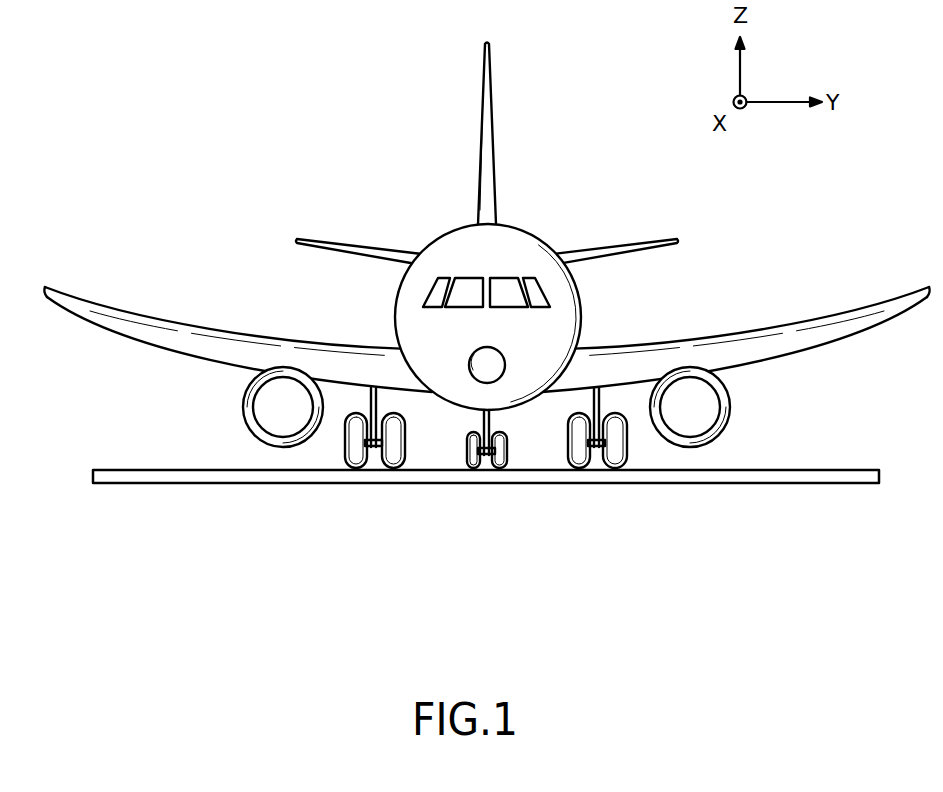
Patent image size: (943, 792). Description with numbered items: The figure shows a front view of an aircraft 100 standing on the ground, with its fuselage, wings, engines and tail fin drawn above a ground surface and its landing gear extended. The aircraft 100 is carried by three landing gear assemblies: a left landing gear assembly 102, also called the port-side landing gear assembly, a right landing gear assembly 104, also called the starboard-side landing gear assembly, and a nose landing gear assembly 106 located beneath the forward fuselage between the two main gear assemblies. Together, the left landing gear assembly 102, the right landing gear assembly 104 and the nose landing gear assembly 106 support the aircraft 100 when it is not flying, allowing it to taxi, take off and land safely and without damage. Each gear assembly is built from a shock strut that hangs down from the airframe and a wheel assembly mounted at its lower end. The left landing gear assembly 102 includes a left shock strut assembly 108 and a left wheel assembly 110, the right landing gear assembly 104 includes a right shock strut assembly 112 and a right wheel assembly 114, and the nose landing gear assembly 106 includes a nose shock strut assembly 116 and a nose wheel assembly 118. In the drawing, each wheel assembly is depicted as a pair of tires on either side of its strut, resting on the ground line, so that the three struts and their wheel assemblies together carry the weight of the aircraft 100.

The aircraft 100 is at (326, 132).
The left landing gear assembly 102 is at (664, 463).
The right landing gear assembly 104 is at (346, 386).
The nose landing gear assembly 106 is at (441, 465).
The left shock strut assembly 108 is at (593, 395).
The left wheel assembly 110 is at (598, 447).
The right shock strut assembly 112 is at (362, 433).
The right wheel assembly 114 is at (376, 450).
The nose shock strut assembly 116 is at (495, 413).
The nose wheel assembly 118 is at (487, 452).